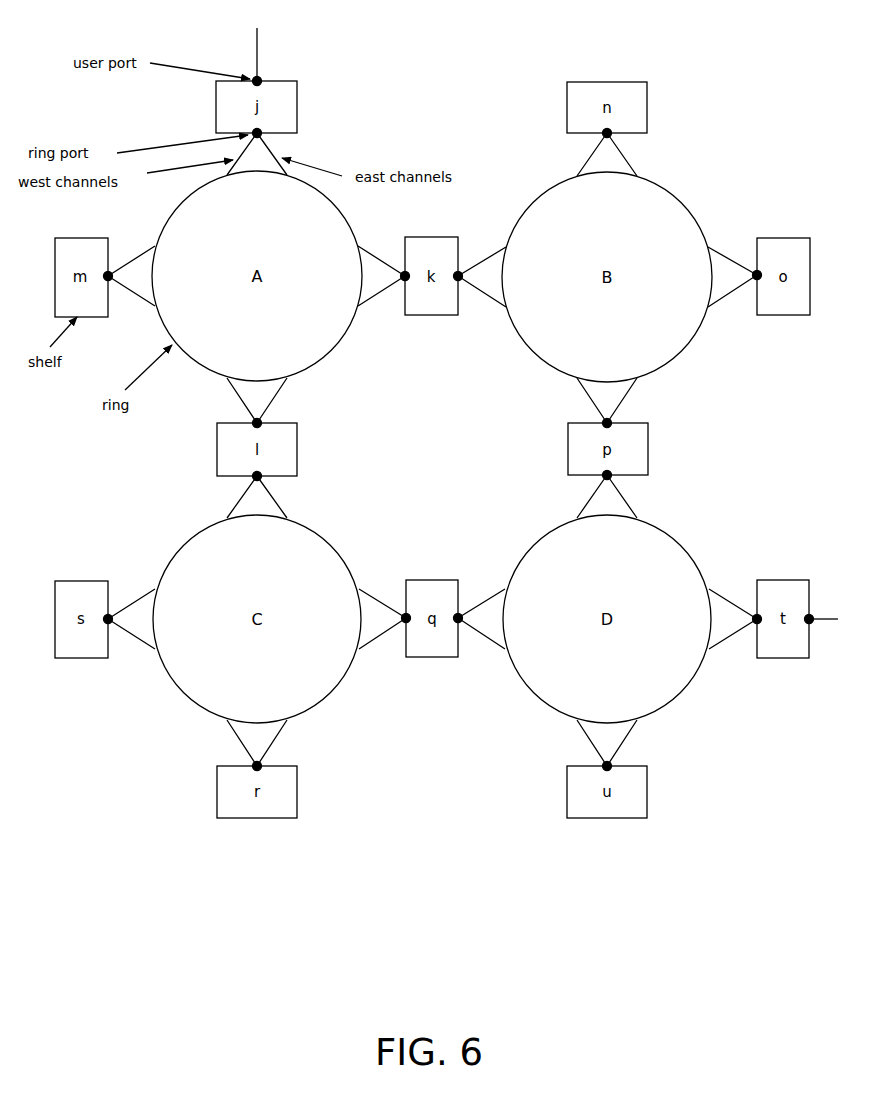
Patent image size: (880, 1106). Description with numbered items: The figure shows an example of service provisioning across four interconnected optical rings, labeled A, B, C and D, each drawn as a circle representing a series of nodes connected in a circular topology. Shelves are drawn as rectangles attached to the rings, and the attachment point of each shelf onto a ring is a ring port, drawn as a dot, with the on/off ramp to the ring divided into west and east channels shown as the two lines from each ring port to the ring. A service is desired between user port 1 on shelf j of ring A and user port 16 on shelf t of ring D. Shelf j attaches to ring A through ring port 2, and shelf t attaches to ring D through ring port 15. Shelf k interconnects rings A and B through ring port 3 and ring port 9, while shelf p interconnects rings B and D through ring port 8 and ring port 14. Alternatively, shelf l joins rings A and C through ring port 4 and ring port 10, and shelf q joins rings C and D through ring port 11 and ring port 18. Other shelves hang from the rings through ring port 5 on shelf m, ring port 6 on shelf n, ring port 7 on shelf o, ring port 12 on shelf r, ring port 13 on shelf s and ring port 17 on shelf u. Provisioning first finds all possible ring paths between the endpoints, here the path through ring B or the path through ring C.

The user port 1 is at (262, 57).
The ring port 2 is at (257, 152).
The ring port 3 is at (384, 274).
The ring port 4 is at (260, 403).
The ring port 5 is at (130, 281).
The ring port 6 is at (607, 153).
The ring port 7 is at (735, 272).
The ring port 8 is at (609, 403).
The ring port 9 is at (480, 279).
The ring port 10 is at (263, 495).
The ring port 11 is at (385, 614).
The ring port 12 is at (265, 745).
The ring port 13 is at (130, 625).
The ring port 14 is at (613, 495).
The ring port 15 is at (735, 615).
The user port 16 is at (822, 608).
The ring port 17 is at (612, 745).
The ring port 18 is at (480, 625).